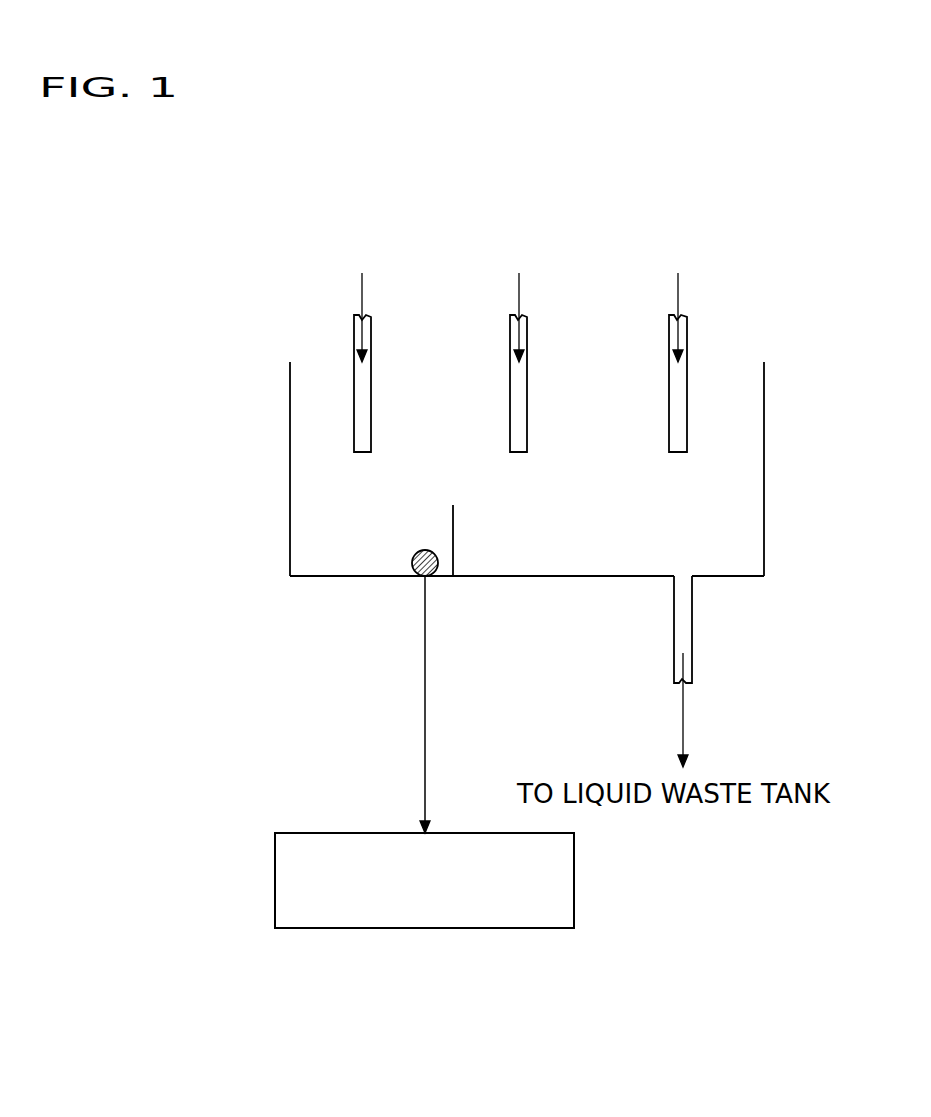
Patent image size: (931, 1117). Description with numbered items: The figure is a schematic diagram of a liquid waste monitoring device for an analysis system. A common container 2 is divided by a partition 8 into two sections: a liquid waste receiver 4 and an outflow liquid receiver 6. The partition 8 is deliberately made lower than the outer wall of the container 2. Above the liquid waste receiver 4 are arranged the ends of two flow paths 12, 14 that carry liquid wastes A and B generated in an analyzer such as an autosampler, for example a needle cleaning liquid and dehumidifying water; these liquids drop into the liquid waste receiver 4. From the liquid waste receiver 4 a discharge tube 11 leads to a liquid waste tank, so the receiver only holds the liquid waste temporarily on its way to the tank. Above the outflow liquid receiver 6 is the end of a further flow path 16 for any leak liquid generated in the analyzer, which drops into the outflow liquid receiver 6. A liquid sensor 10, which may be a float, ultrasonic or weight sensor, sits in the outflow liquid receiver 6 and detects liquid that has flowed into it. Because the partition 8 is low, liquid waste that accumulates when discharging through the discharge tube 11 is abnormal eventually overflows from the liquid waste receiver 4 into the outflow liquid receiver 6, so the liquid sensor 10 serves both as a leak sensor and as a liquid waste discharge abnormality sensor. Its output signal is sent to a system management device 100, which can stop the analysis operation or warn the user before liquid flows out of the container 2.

The container 2 is at (768, 393).
The liquid waste receiver 4 is at (752, 533).
The outflow liquid receiver 6 is at (300, 528).
The partition 8 is at (453, 533).
The liquid sensor 10 is at (415, 578).
The discharge tube 11 is at (682, 598).
The flow path 12 is at (515, 394).
The flow path 14 is at (677, 410).
The flow path 16 is at (360, 394).
The system management device 100 is at (503, 928).